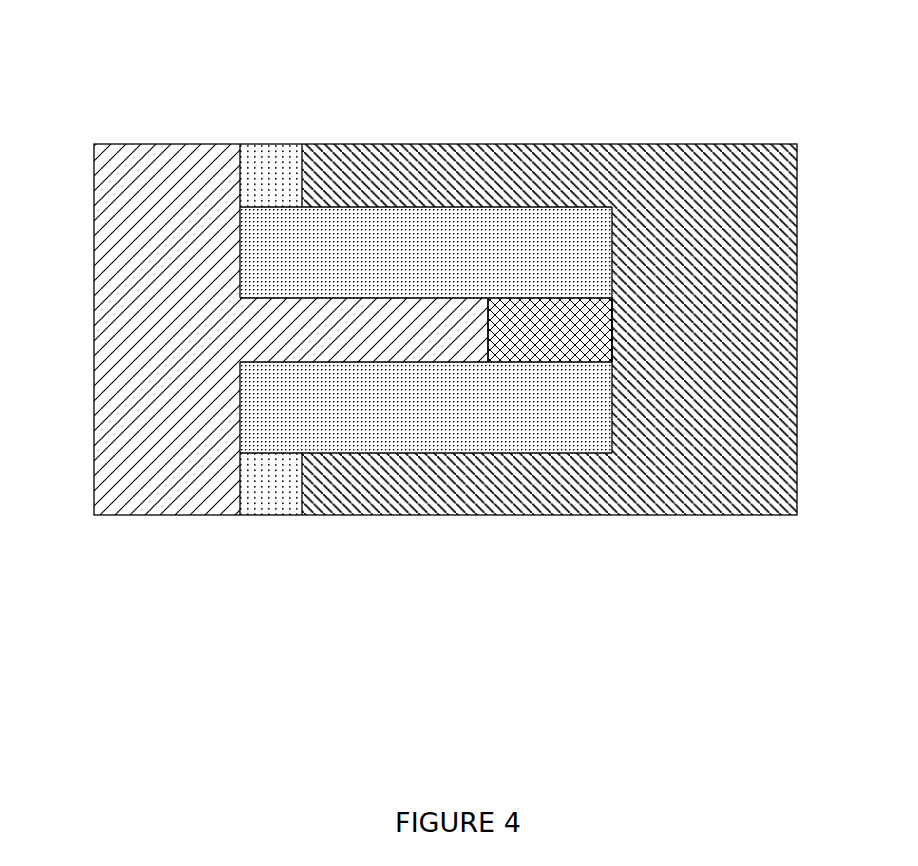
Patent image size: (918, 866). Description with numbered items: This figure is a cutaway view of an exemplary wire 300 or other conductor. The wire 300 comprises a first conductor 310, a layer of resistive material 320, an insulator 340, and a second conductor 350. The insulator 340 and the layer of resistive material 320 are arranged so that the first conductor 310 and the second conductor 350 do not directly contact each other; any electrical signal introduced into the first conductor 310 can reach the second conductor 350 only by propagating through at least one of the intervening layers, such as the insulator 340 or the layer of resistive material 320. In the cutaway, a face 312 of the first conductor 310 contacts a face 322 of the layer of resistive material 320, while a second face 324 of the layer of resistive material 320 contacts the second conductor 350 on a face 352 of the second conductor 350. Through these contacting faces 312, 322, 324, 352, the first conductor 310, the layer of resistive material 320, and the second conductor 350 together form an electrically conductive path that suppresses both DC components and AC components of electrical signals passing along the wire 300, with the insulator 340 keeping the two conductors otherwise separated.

The wire 300 is at (66, 56).
The first conductor 310 is at (146, 144).
The face of the first conductor 312 is at (467, 298).
The layer of resistive material 320 is at (535, 299).
The face of the layer of resistive material 322 is at (488, 304).
The second face of the layer of resistive material 324 is at (610, 333).
The insulator 340 is at (268, 144).
The second conductor 350 is at (755, 144).
The face of the second conductor 352 is at (611, 333).